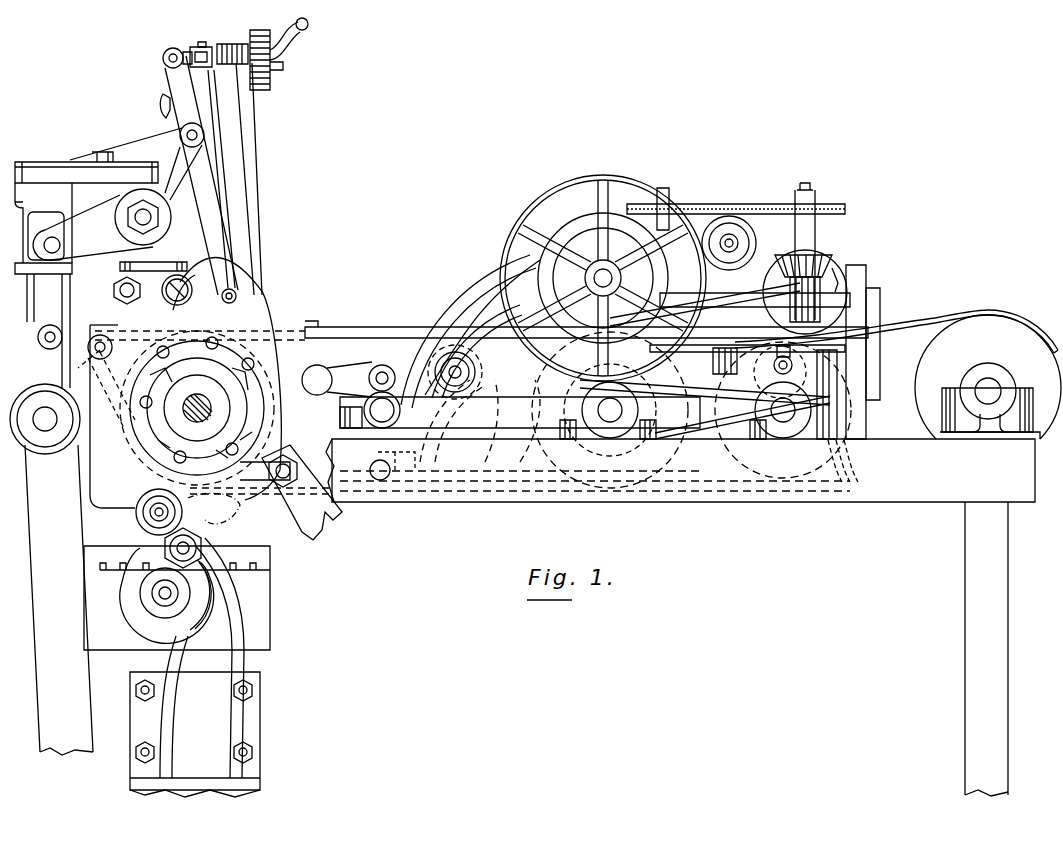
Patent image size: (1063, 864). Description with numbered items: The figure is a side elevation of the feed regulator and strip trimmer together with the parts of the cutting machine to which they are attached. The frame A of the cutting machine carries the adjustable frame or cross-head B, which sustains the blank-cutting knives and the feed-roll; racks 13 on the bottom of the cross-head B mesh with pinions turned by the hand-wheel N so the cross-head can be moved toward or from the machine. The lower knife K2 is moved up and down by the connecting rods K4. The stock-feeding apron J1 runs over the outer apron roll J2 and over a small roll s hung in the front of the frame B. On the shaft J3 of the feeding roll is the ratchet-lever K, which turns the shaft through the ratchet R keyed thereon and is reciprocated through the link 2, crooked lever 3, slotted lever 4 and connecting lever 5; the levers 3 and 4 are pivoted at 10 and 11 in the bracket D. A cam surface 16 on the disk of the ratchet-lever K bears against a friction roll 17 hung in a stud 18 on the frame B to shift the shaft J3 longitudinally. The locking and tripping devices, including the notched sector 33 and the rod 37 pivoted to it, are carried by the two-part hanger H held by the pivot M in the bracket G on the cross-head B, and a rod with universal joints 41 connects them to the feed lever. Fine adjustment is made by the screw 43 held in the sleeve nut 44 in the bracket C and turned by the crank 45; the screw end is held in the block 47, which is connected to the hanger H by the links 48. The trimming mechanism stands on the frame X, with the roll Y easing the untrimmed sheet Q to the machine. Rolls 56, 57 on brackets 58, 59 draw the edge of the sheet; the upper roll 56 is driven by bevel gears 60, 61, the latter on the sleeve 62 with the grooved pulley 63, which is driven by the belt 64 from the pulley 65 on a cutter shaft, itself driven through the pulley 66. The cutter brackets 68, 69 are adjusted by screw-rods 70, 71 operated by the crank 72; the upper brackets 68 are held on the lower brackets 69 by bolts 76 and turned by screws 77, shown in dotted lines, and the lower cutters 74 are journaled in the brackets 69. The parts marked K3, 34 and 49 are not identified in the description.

The adjustable frame or cross-head B is at (56, 185).
The rod K3 is at (32, 298).
The lower knife K2 is at (40, 372).
The ratchet-lever K is at (63, 408).
The connecting rods K4 is at (60, 500).
The bracket G is at (140, 143).
The pivot M is at (177, 142).
The two part hanger H is at (160, 80).
The bracket C is at (240, 134).
The screw 43 is at (222, 70).
The links 48 is at (172, 48).
The block 47 is at (203, 47).
The sleeve nut 44 is at (228, 44).
The knurled knob 49 is at (257, 49).
The crank 45 is at (289, 44).
The universal joint 41 is at (160, 100).
The link 2 is at (149, 278).
The rod 37 is at (179, 274).
The sector 33 is at (248, 280).
The pivot 34 is at (238, 297).
The crooked lever 3 is at (227, 387).
The friction roll 17 is at (232, 342).
The stud 18 is at (100, 336).
The small roll s is at (102, 383).
The ratchet R is at (150, 398).
The shaft J3 is at (180, 418).
The cam surface 16 is at (182, 462).
The pivot 10 is at (160, 512).
The pivot 11 is at (205, 544).
The slotted lever 4 is at (243, 498).
The connecting lever 5 is at (318, 525).
The frame A is at (248, 602).
The hand-wheel N is at (128, 616).
The racks 13 is at (120, 580).
The bracket D is at (195, 734).
The supporting frame X is at (680, 617).
The outer apron supporting roll J2 is at (778, 470).
The screws 77 is at (455, 430).
The crank 72 is at (586, 359).
The stock-feeding apron J1 is at (313, 370).
The screw-rod 70 is at (372, 380).
The screw-rod 71 is at (508, 410).
The bolts 76 is at (445, 365).
The upper brackets 68 is at (470, 331).
The lower brackets 69 is at (477, 351).
The pulley 66 is at (601, 278).
The grooved pulley 65 is at (603, 278).
The belt 64 is at (738, 216).
The grooved pulley 63 is at (832, 210).
The bevel gear 61 is at (828, 250).
The sleeve 62 is at (816, 271).
The upper roll 56 is at (830, 258).
The bevel gear 60 is at (807, 292).
The bracket 58 is at (730, 317).
The lower roll 57 is at (759, 372).
The bracket 59 is at (698, 394).
The lower cutters 74 is at (680, 430).
The untrimmed sheet Q is at (896, 352).
The roll Y is at (988, 377).